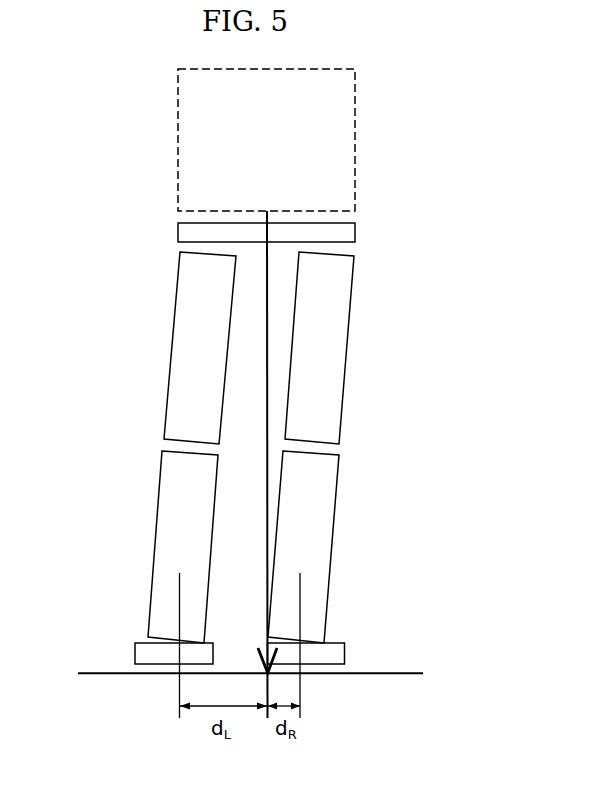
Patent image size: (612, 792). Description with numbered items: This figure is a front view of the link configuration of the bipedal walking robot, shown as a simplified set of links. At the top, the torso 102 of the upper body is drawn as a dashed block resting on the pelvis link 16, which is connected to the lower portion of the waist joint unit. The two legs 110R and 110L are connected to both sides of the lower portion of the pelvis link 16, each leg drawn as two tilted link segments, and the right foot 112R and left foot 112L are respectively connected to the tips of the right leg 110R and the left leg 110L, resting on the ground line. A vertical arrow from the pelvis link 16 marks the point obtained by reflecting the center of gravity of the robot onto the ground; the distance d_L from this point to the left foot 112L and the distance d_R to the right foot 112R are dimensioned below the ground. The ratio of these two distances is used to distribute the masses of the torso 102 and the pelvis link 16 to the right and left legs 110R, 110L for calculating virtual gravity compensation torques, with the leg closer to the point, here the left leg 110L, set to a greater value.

The torso 102 is at (355, 137).
The pelvis link 16 is at (355, 229).
The right leg 110R is at (173, 358).
The left leg 110L is at (345, 358).
The right foot 112R is at (136, 652).
The left foot 112L is at (345, 652).